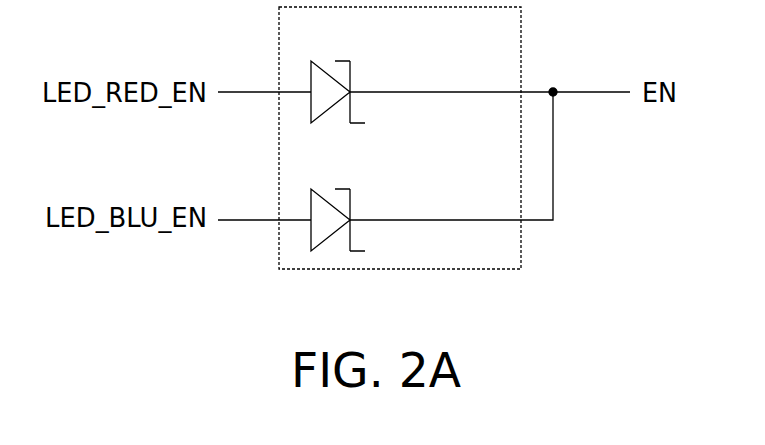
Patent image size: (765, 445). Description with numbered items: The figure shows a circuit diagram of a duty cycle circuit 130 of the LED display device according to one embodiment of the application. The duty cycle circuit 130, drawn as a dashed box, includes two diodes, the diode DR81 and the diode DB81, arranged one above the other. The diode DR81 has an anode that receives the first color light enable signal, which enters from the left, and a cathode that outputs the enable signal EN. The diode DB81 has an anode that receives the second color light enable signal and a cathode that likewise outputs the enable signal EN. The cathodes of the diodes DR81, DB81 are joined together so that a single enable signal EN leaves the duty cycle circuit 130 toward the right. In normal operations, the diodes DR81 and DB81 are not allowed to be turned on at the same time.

The duty cycle circuit 130 is at (521, 248).
The diode DR81 is at (332, 72).
The diode DB81 is at (332, 199).